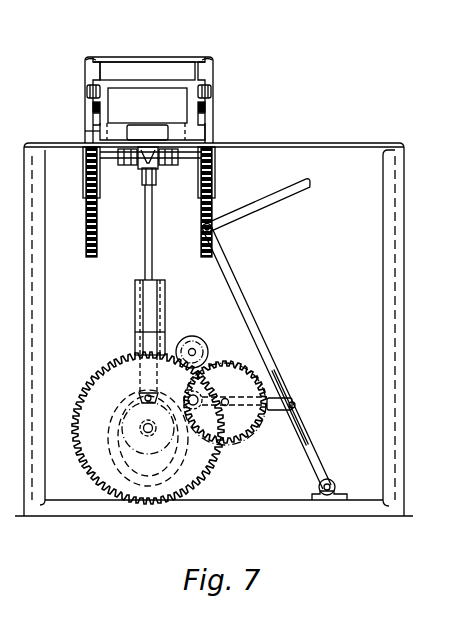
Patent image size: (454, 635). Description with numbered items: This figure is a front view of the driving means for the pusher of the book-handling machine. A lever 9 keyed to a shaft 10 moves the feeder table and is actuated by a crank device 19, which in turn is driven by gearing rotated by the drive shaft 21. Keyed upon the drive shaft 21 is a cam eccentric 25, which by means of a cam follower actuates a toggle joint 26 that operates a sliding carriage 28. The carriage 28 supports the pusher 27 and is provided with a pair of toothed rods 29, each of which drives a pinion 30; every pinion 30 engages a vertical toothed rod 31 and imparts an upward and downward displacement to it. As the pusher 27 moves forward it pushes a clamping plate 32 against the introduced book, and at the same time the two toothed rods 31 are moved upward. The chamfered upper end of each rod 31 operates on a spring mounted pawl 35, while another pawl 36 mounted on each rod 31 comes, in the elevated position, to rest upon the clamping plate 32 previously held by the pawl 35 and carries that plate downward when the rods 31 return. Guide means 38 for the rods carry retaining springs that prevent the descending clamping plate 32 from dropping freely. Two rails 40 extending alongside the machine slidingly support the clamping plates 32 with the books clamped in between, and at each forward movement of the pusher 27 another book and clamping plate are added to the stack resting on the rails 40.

The lever 9 is at (250, 320).
The shaft 10 is at (330, 484).
The crank device 19 is at (270, 418).
The drive shaft 21 is at (148, 433).
The cam eccentric 25 is at (112, 470).
The toggle joint 26 is at (152, 205).
The pusher 27 is at (152, 133).
The sliding carriage 28 is at (146, 166).
The toothed rod 29 is at (164, 166).
The pinion 30 is at (128, 166).
The toothed rod 31 is at (97, 242).
The clamping plate 32 is at (158, 70).
The spring mounted pawl 35 is at (86, 74).
The pawl 36 is at (87, 91).
The guide means 38 is at (93, 107).
The rail 40 is at (86, 133).